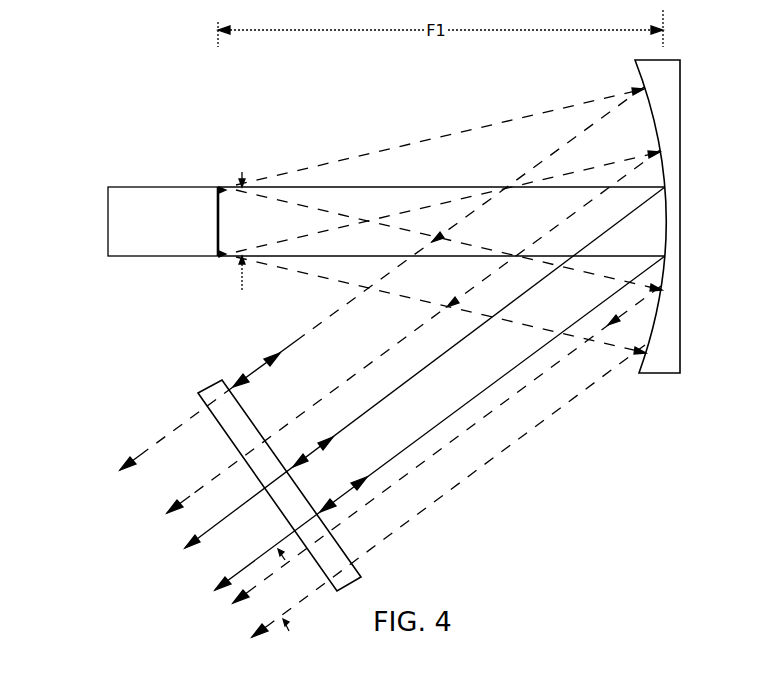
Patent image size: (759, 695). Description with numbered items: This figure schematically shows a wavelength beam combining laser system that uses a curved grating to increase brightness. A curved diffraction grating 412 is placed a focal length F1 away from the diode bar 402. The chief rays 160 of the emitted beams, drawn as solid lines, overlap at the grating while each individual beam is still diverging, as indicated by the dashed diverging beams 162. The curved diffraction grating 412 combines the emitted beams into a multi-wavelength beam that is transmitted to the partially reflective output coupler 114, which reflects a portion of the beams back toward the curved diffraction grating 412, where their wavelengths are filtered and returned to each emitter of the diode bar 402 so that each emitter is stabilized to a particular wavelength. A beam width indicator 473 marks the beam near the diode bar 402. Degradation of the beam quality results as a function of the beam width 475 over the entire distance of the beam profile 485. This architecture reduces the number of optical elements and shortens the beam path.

The diode bar 402 is at (158, 186).
The chief rays 160 is at (422, 186).
The diverging beams 162 is at (379, 147).
The beam width 473 is at (243, 242).
The curved diffraction grating 412 is at (683, 133).
The partially reflective output coupler 114 is at (209, 387).
The beam profile 485 is at (158, 436).
The beam width 475 is at (238, 502).